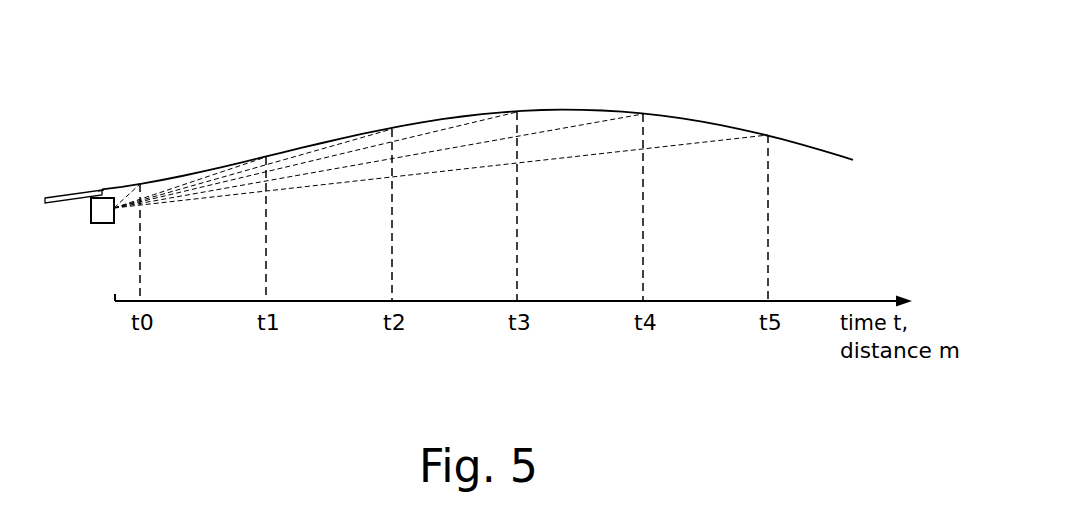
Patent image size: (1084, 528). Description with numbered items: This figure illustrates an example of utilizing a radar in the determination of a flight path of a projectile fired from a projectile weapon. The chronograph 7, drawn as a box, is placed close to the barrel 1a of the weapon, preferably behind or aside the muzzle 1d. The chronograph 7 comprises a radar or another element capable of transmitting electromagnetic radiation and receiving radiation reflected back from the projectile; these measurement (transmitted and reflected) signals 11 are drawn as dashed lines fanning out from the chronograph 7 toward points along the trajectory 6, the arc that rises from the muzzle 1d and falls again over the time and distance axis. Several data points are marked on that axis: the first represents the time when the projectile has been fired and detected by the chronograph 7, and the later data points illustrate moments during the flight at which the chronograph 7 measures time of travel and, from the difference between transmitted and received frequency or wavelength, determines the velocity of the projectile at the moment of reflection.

The barrel of the projectile weapon 1a is at (63, 196).
The muzzle 1d is at (105, 184).
The trajectory 6 is at (425, 121).
The chronograph 7 is at (97, 224).
The measurement (transmitted and reflected) signals 11 is at (355, 168).